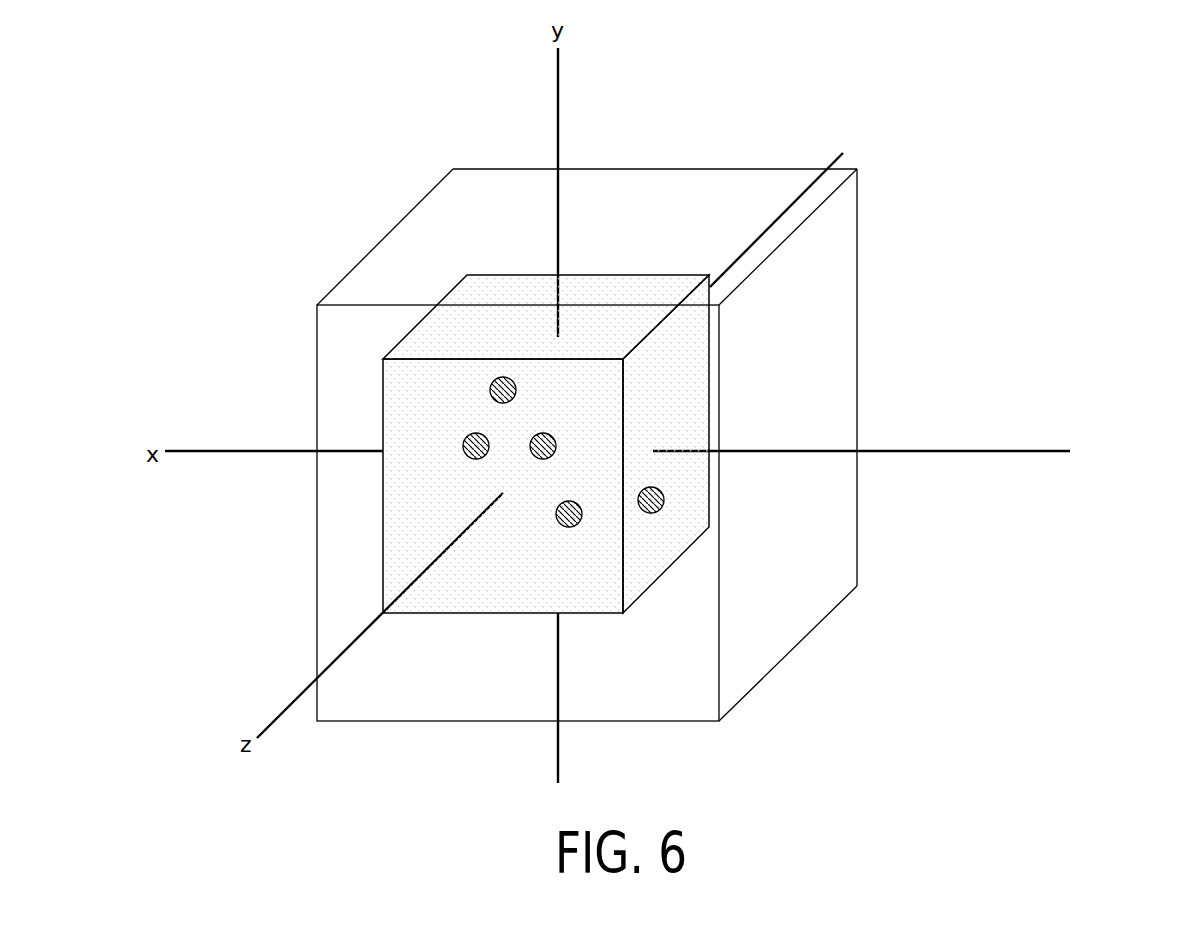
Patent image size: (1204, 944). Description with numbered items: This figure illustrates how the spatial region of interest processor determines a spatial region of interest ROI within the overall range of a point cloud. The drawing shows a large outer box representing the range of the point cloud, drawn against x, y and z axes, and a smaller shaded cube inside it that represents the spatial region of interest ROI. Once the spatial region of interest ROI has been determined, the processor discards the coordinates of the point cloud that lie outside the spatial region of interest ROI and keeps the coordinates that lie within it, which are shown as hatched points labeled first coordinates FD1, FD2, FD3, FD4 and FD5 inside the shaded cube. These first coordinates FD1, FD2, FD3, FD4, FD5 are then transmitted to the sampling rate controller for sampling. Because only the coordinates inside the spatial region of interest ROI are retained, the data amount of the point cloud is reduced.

The spatial region of interest ROI is at (632, 290).
The first coordinate FD1 is at (466, 457).
The first coordinate FD2 is at (490, 388).
The first coordinate FD3 is at (556, 440).
The first coordinate FD4 is at (582, 518).
The first coordinate FD5 is at (664, 500).